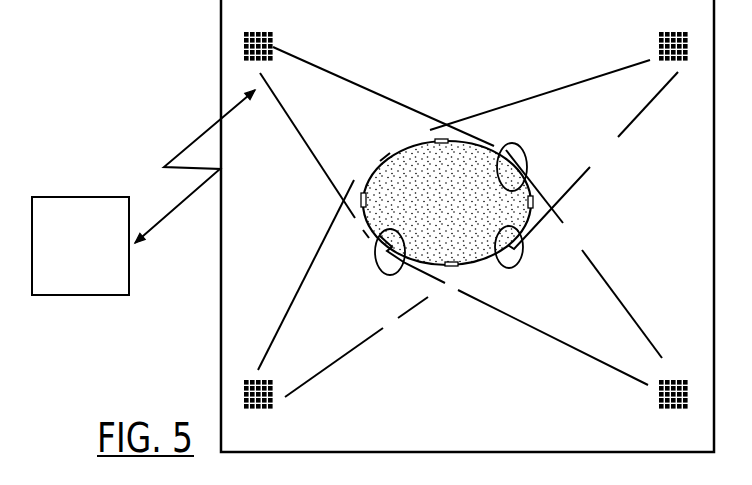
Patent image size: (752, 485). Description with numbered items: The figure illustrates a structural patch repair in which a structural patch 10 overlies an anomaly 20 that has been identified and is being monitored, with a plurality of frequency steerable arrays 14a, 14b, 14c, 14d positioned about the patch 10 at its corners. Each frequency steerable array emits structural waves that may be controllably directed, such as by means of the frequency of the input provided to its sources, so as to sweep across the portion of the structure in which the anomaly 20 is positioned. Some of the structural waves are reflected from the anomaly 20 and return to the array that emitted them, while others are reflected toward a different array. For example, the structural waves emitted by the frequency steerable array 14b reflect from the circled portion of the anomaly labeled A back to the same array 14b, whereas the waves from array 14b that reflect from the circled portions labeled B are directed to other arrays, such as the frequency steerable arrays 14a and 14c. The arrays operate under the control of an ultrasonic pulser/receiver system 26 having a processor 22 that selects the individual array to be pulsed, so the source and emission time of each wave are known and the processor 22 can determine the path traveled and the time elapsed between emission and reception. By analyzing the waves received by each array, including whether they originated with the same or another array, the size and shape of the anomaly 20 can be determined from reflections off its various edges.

The structural patch 10 is at (233, 280).
The frequency steerable array 14a is at (259, 410).
The frequency steerable array 14b is at (673, 410).
The frequency steerable array 14c is at (676, 32).
The frequency steerable array 14d is at (258, 32).
The anomaly 20 is at (418, 153).
The processor 22 is at (76, 197).
The ultrasonic pulser/receiver system 26 is at (59, 148).
The circled portion of the structural anomaly A is at (522, 257).
The circled portions of the structural anomaly B is at (527, 162).